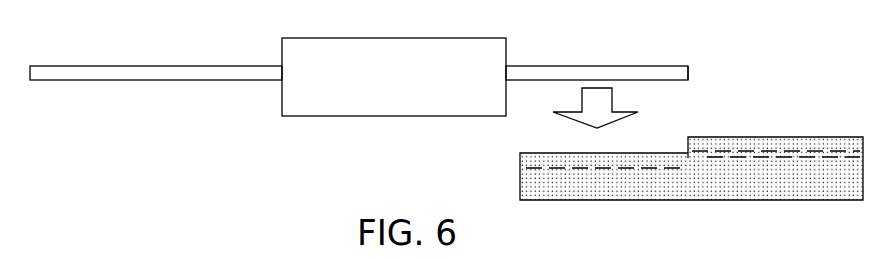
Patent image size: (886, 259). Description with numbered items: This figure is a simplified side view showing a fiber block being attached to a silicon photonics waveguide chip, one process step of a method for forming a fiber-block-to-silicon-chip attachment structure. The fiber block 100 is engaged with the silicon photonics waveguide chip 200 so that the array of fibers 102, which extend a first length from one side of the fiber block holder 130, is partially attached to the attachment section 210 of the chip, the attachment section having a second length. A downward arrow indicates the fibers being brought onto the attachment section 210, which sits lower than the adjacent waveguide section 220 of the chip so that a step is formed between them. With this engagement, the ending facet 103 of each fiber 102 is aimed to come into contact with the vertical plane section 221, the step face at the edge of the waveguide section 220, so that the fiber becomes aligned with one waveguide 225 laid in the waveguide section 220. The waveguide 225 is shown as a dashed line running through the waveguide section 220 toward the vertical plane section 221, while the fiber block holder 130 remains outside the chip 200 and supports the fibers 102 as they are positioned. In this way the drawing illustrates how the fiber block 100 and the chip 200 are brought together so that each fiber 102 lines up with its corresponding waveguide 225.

The fiber block 100 is at (338, 134).
The fiber block holder 130 is at (412, 38).
The fiber 102 is at (578, 66).
The ending facet 103 is at (689, 72).
The silicon photonics waveguide chip 200 is at (774, 114).
The attachment section 210 is at (520, 177).
The waveguide section 220 is at (773, 137).
The vertical plane section 221 is at (688, 144).
The waveguide 225 is at (798, 158).